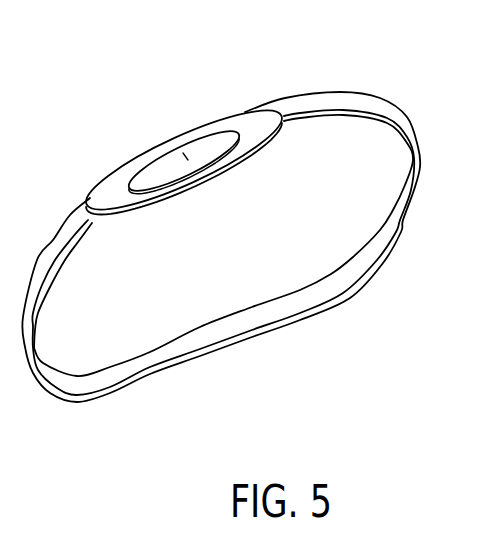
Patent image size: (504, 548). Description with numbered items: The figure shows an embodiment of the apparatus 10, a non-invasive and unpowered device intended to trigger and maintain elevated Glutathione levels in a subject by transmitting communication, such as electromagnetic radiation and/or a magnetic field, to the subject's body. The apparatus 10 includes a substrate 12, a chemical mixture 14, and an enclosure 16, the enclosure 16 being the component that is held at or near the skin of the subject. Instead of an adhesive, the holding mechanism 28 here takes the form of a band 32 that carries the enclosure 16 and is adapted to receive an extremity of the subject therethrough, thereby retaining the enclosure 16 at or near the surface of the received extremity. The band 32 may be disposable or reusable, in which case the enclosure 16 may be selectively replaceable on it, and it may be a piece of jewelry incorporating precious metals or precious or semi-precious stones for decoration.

The apparatus 10 is at (204, 76).
The substrate 12 is at (168, 167).
The chemical mixture 14 is at (183, 153).
The enclosure 16 is at (254, 118).
The mechanism 28 is at (412, 108).
The band 32 is at (422, 155).